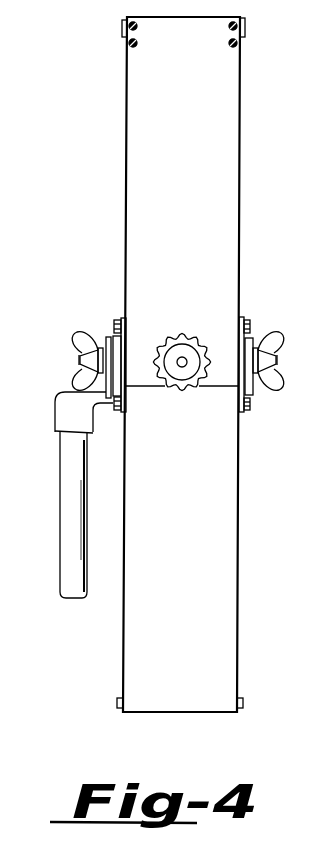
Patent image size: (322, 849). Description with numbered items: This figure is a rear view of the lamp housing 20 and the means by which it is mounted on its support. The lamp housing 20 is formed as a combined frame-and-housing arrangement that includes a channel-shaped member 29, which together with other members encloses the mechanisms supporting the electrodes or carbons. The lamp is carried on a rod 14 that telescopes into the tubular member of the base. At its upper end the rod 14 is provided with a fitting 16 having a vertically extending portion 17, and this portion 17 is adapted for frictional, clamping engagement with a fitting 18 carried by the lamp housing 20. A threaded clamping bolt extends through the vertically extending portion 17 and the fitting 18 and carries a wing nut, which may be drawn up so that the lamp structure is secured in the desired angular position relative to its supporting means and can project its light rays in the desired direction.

The rod 14 is at (60, 519).
The fitting 16 is at (55, 405).
The vertically extending portion 17 is at (108, 337).
The fitting 18 is at (122, 333).
The lamp housing 20 is at (124, 203).
The channel-shaped member 29 is at (226, 178).